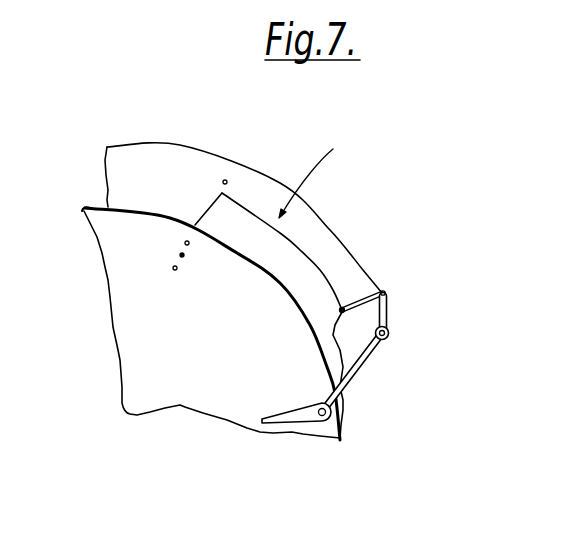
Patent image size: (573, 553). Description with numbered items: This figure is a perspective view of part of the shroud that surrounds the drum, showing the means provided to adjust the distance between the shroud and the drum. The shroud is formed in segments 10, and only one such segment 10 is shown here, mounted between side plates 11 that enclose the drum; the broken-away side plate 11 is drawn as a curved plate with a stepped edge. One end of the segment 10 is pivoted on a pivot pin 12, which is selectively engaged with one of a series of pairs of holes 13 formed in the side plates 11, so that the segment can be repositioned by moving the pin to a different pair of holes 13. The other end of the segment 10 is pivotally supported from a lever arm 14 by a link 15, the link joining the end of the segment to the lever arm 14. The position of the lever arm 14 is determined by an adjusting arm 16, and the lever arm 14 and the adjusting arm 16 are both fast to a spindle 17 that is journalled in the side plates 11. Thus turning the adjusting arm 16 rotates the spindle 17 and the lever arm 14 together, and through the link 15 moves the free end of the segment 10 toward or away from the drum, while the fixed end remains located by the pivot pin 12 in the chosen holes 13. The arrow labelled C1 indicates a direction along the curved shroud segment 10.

The segment 10 is at (300, 252).
The side plates 11 is at (148, 148).
The pivot pin 12 is at (180, 255).
The holes 13 is at (226, 181).
The lever arm 14 is at (387, 313).
The link 15 is at (382, 292).
The adjusting arm 16 is at (308, 412).
The spindle 17 is at (353, 375).
The direction of curvature C1 is at (319, 173).